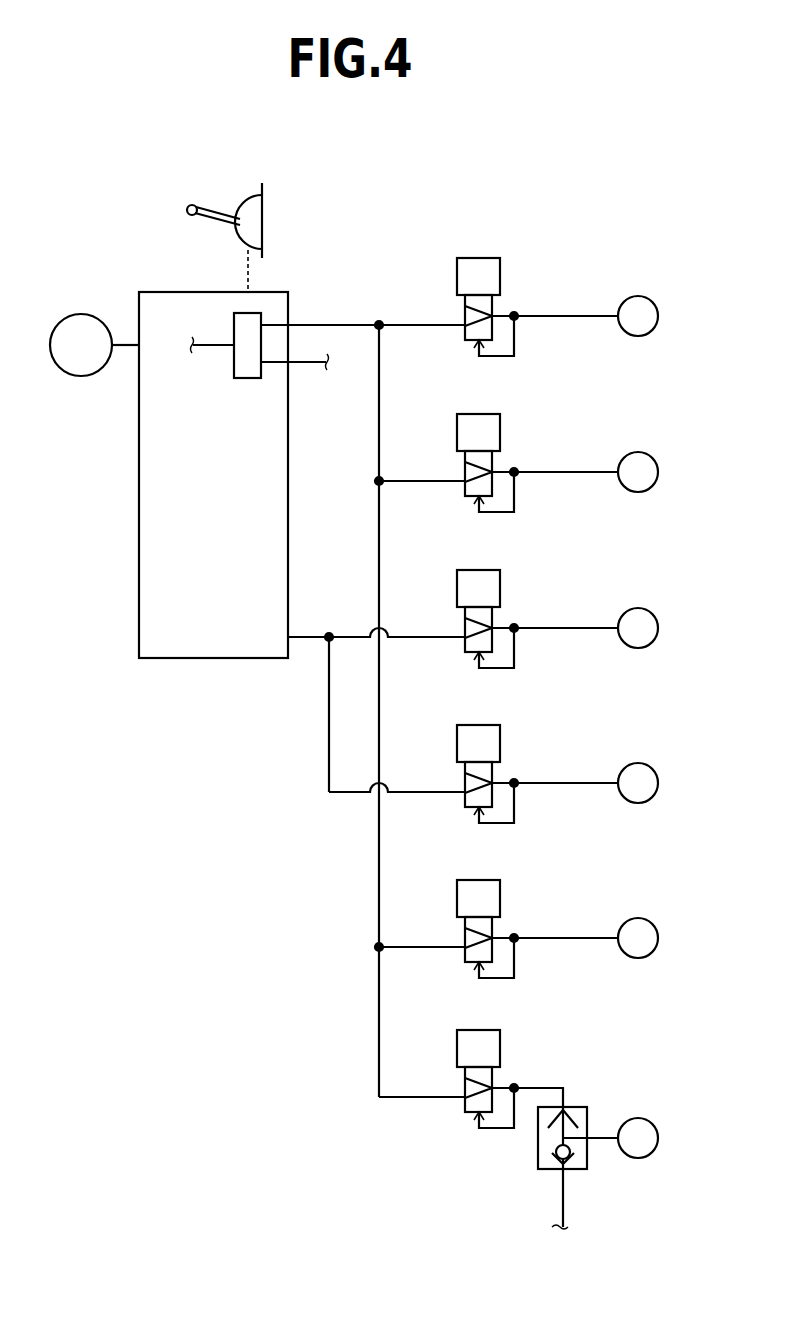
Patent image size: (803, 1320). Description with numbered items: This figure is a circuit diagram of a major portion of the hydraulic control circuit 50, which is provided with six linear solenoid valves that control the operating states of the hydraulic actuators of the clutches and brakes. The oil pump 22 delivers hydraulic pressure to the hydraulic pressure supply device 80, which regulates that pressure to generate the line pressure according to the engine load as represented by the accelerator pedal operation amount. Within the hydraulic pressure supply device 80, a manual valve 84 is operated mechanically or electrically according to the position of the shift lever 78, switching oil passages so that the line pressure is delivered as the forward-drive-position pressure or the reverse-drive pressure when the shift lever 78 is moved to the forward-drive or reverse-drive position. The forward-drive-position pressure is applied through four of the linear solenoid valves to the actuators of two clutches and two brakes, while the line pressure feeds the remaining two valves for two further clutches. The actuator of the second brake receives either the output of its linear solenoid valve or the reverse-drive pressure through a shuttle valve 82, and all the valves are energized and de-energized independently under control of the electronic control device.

The oil pump 22 is at (84, 319).
The hydraulic control circuit 50 is at (420, 190).
The shift lever 78 is at (210, 204).
The hydraulic pressure supply device 80 is at (203, 303).
The shuttle valve 82 is at (577, 1110).
The manual valve 84 is at (248, 378).